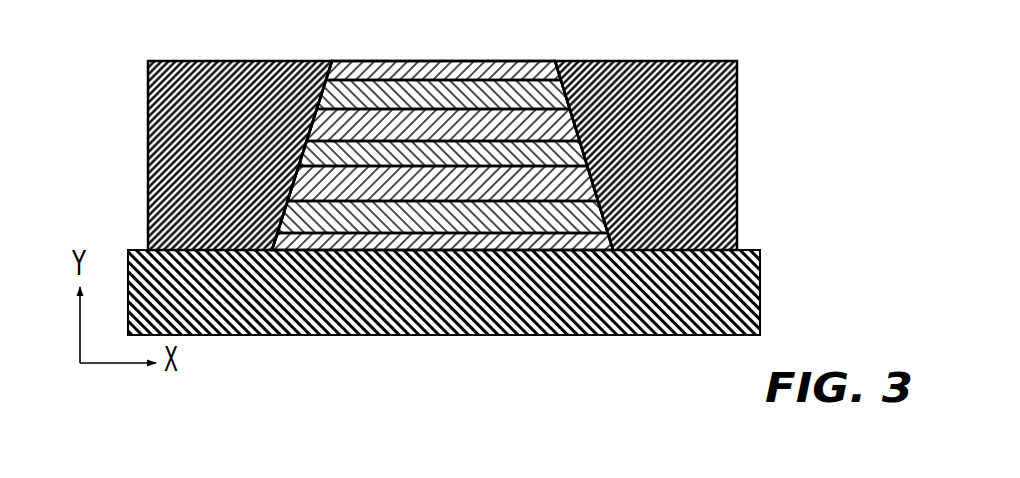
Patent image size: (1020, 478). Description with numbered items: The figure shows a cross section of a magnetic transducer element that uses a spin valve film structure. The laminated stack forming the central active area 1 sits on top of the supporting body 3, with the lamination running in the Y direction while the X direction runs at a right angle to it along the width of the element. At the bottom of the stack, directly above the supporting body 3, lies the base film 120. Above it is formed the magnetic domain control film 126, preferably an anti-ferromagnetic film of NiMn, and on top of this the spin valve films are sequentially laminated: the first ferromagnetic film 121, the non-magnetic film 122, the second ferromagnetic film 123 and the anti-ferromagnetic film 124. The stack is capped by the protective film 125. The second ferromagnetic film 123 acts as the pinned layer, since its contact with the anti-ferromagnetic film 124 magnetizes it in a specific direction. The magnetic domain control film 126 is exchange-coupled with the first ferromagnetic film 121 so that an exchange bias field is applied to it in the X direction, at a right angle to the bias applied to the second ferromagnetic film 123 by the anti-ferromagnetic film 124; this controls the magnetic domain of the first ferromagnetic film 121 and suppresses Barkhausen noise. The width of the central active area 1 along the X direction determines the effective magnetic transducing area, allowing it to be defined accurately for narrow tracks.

The central active area 1 is at (454, 57).
The supporting body 3 is at (760, 305).
The base film 120 is at (608, 234).
The first ferromagnetic film 121 is at (588, 167).
The non-magnetic film 122 is at (306, 142).
The second ferromagnetic film 123 is at (570, 110).
The anti-ferromagnetic film 124 is at (326, 78).
The protective film 125 is at (561, 81).
The magnetic domain control film 126 is at (290, 193).